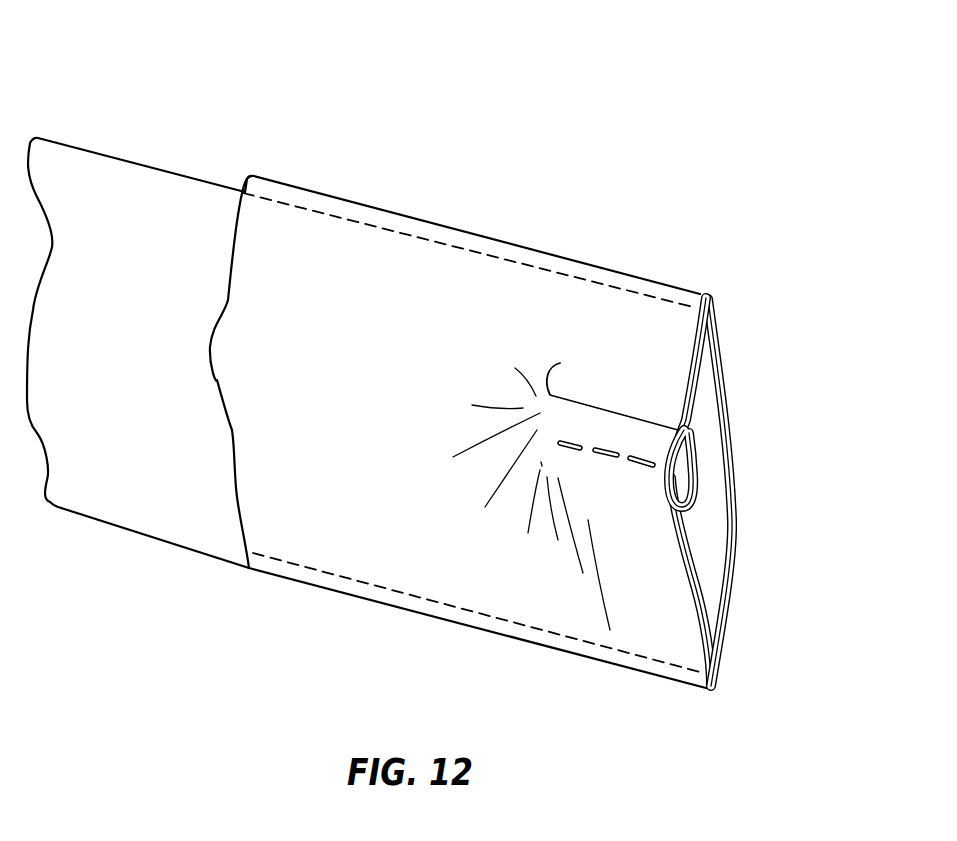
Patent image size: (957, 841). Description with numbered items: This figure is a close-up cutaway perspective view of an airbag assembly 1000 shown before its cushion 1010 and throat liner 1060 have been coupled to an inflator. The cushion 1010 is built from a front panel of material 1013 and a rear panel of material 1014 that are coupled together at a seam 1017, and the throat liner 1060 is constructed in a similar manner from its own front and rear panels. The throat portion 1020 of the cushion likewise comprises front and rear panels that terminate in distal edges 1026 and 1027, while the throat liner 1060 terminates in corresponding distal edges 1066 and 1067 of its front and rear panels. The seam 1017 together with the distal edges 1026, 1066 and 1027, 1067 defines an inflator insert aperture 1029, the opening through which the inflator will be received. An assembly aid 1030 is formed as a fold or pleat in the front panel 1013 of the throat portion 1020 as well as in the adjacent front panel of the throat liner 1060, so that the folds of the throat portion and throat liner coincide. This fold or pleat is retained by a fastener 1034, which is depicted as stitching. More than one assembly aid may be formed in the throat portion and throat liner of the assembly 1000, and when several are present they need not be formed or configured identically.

The airbag assembly 1000 is at (468, 102).
The cushion 1010 is at (450, 197).
The throat liner 1060 is at (148, 188).
The throat portion 1020 is at (470, 280).
The seam 1017 is at (562, 268).
The front panel of material 1013 is at (384, 403).
The assembly aid 1030 is at (600, 483).
The fastener 1034 is at (610, 450).
The rear panel of material 1014 is at (707, 376).
The inflator insert aperture 1029 is at (707, 413).
The distal edge of rear panel 1027 is at (801, 492).
The distal edge of rear panel of throat liner 1067 is at (737, 520).
The distal edge of front panel 1026 is at (784, 581).
The distal edge of front panel of throat liner 1066 is at (700, 565).